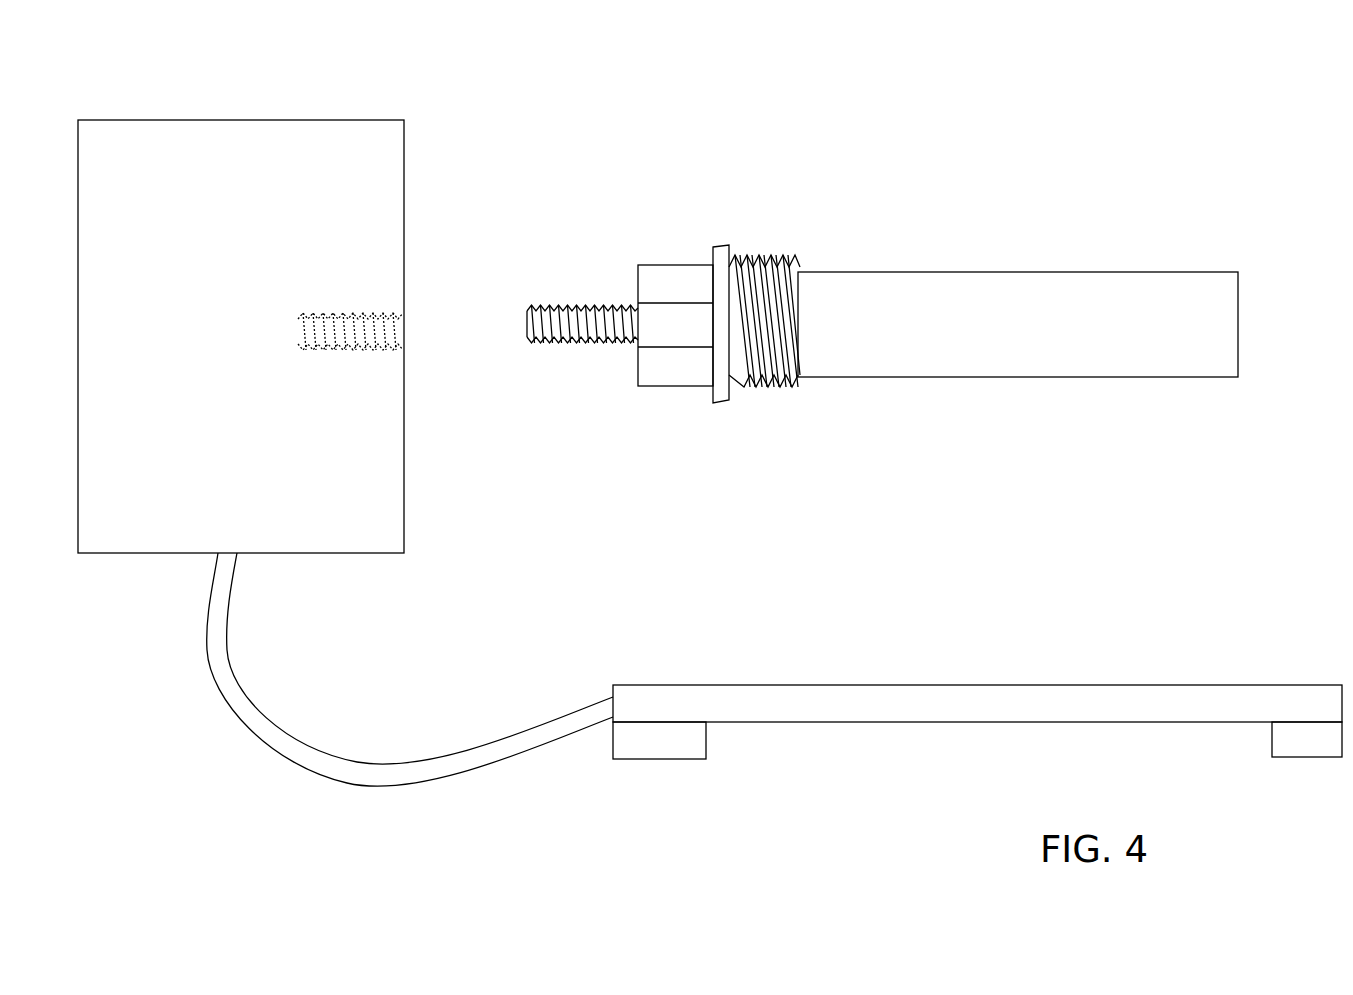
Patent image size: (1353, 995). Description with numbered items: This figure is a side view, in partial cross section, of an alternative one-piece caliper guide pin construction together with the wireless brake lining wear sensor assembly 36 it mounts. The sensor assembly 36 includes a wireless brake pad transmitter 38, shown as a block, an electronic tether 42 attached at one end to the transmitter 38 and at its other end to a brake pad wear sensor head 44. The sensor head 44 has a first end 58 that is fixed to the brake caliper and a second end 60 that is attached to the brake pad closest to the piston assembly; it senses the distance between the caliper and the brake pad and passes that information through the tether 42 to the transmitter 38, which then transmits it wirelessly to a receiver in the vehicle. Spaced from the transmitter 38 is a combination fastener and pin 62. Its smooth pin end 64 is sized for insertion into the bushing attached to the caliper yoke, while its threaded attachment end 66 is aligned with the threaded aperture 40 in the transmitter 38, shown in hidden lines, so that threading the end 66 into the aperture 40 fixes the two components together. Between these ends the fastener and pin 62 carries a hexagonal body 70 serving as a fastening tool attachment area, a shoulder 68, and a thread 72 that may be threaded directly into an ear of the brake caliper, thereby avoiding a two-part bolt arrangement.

The wireless brake lining wear sensor assembly 36 is at (253, 160).
The wireless brake pad transmitter 38 is at (322, 527).
The threaded aperture 40 is at (404, 315).
The electronic tether 42 is at (302, 767).
The brake pad wear sensor head 44 is at (977, 697).
The first end 58 is at (674, 741).
The second end 60 is at (1315, 748).
The combination fastener and pin 62 is at (1117, 456).
The smooth pin end 64 is at (1082, 290).
The threaded attachment end 66 is at (578, 302).
The shoulder 68 is at (722, 400).
The hexagonal body 70 is at (695, 290).
The thread 72 is at (775, 262).